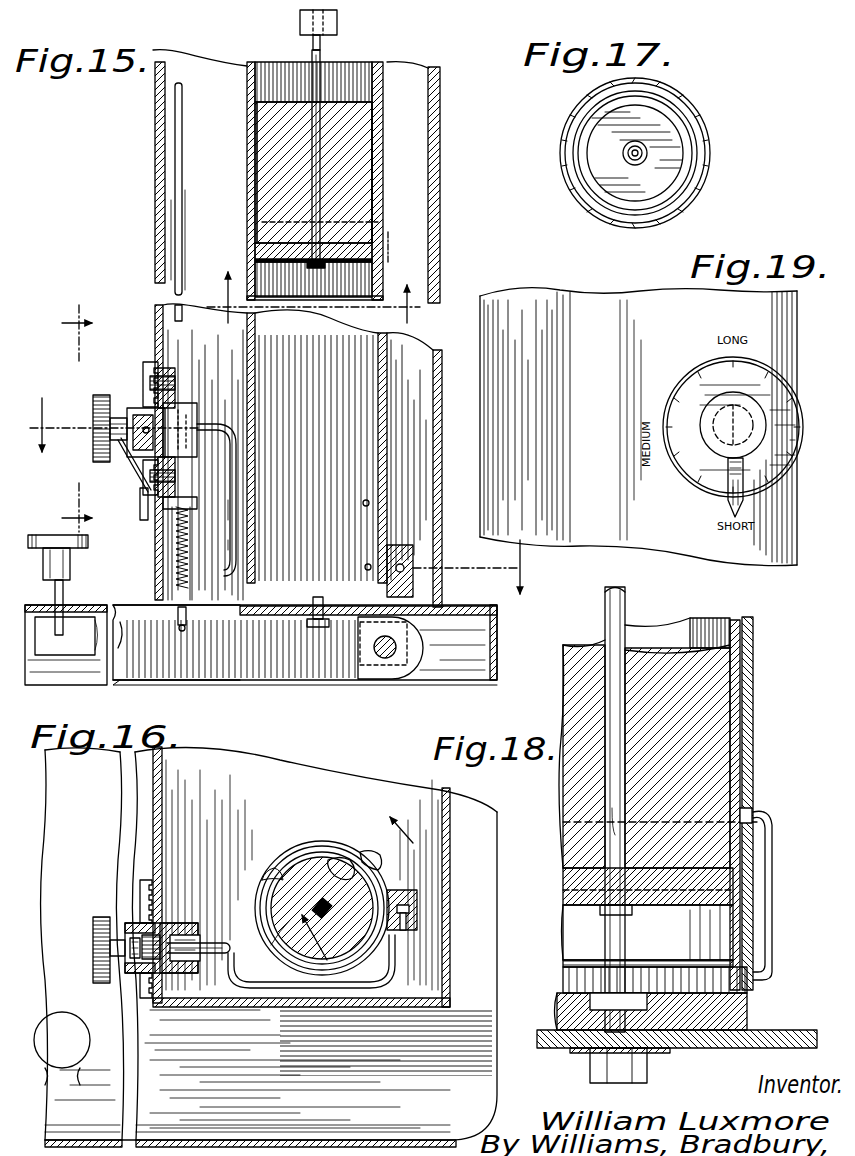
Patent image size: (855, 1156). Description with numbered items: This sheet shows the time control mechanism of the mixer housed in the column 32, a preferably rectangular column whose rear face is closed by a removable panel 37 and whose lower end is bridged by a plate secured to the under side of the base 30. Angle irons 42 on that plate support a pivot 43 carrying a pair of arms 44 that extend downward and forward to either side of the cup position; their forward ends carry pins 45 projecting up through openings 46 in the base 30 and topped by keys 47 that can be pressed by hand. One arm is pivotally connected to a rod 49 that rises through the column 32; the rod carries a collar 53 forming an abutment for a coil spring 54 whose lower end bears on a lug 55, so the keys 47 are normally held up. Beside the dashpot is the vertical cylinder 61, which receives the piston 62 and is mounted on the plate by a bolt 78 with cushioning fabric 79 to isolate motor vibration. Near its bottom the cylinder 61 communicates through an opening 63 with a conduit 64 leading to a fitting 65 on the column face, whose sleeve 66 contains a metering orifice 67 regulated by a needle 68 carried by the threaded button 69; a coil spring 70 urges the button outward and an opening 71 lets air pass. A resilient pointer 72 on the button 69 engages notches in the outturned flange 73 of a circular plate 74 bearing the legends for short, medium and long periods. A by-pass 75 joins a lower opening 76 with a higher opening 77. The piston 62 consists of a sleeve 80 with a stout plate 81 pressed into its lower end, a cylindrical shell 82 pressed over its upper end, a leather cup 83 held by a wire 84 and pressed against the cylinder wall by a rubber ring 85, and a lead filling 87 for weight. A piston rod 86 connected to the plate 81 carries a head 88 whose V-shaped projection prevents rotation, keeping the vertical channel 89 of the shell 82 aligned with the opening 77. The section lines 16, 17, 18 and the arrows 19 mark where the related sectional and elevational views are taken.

In FIG. 15, the section line 16— 16 is at (277, 507).
In FIG. 15, the section line 17— 17 is at (313, 308).
In FIG. 16, the section line 18— 18 is at (362, 896).
In FIG. 15, the arrows 19— 19 is at (64, 418).
In FIG. 15, the base 30 is at (490, 606).
In FIG. 16, the base 30 is at (520, 855).
In FIG. 15, the column 32 is at (155, 128).
In FIG. 19, the column 32 is at (606, 292).
In FIG. 16, the column 32 is at (301, 877).
In FIG. 15, the removable panel 37 is at (440, 225).
In FIG. 16, the removable panel 37 is at (450, 855).
In FIG. 15, the angle irons 42 is at (385, 660).
In FIG. 15, the pivot 43 is at (383, 662).
In FIG. 15, the arms 44 is at (262, 655).
In FIG. 15, the pins 45 is at (56, 596).
In FIG. 15, the openings 46 is at (66, 600).
In FIG. 15, the keys or buttons 47 is at (88, 546).
In FIG. 16, the keys or buttons 47 is at (75, 1065).
In FIG. 15, the rod 49 is at (176, 163).
In FIG. 15, the collar 53 is at (165, 503).
In FIG. 15, the coil spring 54 is at (178, 562).
In FIG. 15, the lug 55 is at (182, 612).
In FIG. 15, the cylinder 61 is at (385, 94).
In FIG. 17, the cylinder 61 is at (695, 143).
In FIG. 16, the cylinder 61 is at (300, 850).
In FIG. 18, the cylinder 61 is at (677, 633).
In FIG. 15, the piston 62 is at (345, 195).
In FIG. 18, the piston 62 is at (722, 690).
In FIG. 15, the opening 63 is at (392, 552).
In FIG. 16, the opening 63 is at (410, 865).
In FIG. 15, the conduit 64 is at (240, 497).
In FIG. 16, the conduit 64 is at (318, 990).
In FIG. 15, the fitting 65 is at (175, 425).
In FIG. 16, the fitting 65 is at (165, 925).
In FIG. 15, the sleeve 66 is at (140, 415).
In FIG. 16, the sleeve 66 is at (135, 960).
In FIG. 16, the metering orifice 67 is at (173, 975).
In FIG. 16, the needle 68 is at (148, 925).
In FIG. 15, the button 69 is at (93, 410).
In FIG. 19, the button 69 is at (718, 440).
In FIG. 16, the button 69 is at (93, 932).
In FIG. 16, the coil spring 70 is at (150, 975).
In FIG. 15, the opening 71 is at (150, 430).
In FIG. 16, the opening 71 is at (145, 965).
In FIG. 15, the pointer 72 is at (146, 490).
In FIG. 19, the pointer 72 is at (730, 508).
In FIG. 15, the outturned flange 73 is at (145, 368).
In FIG. 19, the outturned flange 73 is at (694, 372).
In FIG. 15, the circular plate 74 is at (150, 395).
In FIG. 19, the circular plate 74 is at (700, 392).
In FIG. 16, the by-pass 75 is at (375, 852).
In FIG. 18, the by-pass 75 is at (772, 845).
In FIG. 15, the opening 76 is at (364, 571).
In FIG. 16, the opening 76 is at (350, 858).
In FIG. 18, the opening 76 is at (760, 990).
In FIG. 15, the opening 77 is at (362, 499).
In FIG. 18, the opening 77 is at (745, 812).
In FIG. 15, the bolt 78 is at (316, 598).
In FIG. 18, the bolt 78 is at (603, 1045).
In FIG. 15, the cushioning fabric 79 is at (256, 614).
In FIG. 18, the cushioning fabric 79 is at (778, 1032).
In FIG. 15, the sleeve 80 is at (258, 212).
In FIG. 16, the sleeve 80 is at (275, 880).
In FIG. 15, the stout plate 81 is at (355, 270).
In FIG. 17, the stout plate 81 is at (672, 125).
In FIG. 18, the stout plate 81 is at (690, 900).
In FIG. 15, the cylindrical shell 82 is at (385, 156).
In FIG. 16, the cylindrical shell 82 is at (290, 856).
In FIG. 18, the cylindrical shell 82 is at (738, 710).
In FIG. 15, the cup 83 is at (258, 262).
In FIG. 17, the cup 83 is at (692, 193).
In FIG. 18, the cup 83 is at (745, 920).
In FIG. 18, the wire 84 is at (735, 885).
In FIG. 15, the rubber ring 85 is at (400, 308).
In FIG. 17, the rubber ring 85 is at (685, 170).
In FIG. 18, the rubber ring 85 is at (730, 947).
In FIG. 15, the piston rod 86 is at (320, 82).
In FIG. 17, the piston rod 86 is at (642, 140).
In FIG. 16, the piston rod 86 is at (316, 908).
In FIG. 18, the piston rod 86 is at (625, 610).
In FIG. 15, the lead filling 87 is at (258, 135).
In FIG. 16, the lead filling 87 is at (310, 955).
In FIG. 18, the lead filling 87 is at (700, 650).
In FIG. 15, the head 88 is at (337, 27).
In FIG. 16, the vertical channel 89 is at (330, 842).
In FIG. 18, the vertical channel 89 is at (748, 735).